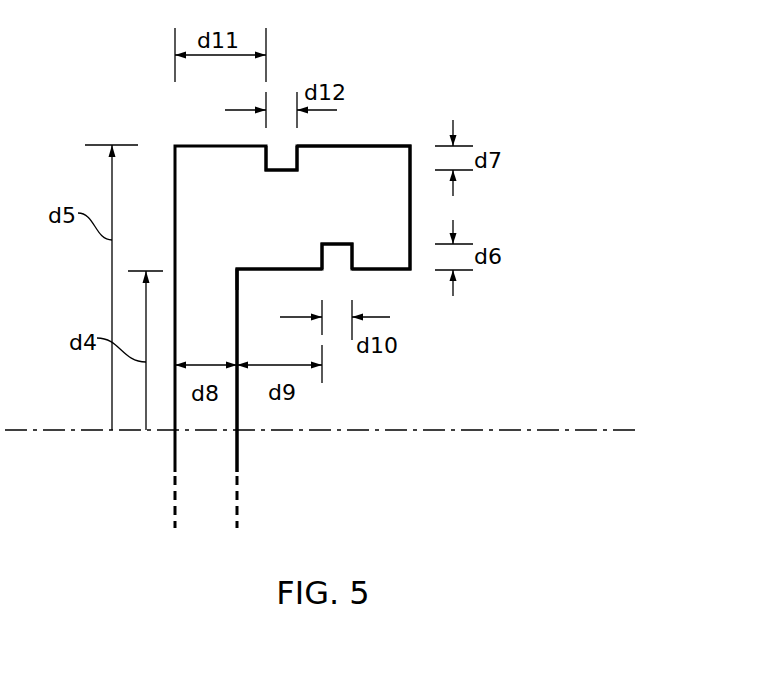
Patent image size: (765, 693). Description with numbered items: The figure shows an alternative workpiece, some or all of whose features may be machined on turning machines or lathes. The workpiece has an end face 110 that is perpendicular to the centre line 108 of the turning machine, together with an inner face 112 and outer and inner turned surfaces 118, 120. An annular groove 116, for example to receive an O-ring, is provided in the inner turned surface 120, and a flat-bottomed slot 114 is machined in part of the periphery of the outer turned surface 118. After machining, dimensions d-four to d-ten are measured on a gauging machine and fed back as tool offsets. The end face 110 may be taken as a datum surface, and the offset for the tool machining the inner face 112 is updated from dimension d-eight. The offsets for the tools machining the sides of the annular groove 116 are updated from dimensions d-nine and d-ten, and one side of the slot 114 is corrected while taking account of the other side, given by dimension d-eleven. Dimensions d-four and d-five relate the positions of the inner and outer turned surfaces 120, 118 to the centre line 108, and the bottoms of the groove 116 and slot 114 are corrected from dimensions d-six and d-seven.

The centre line 108 is at (607, 432).
The end face 110 is at (174, 168).
The inner face 112 is at (238, 453).
The flat-bottomed slot 114 is at (275, 172).
The annular groove 116 is at (338, 244).
The outer turned surface 118 is at (377, 146).
The inner turned surface 120 is at (237, 269).